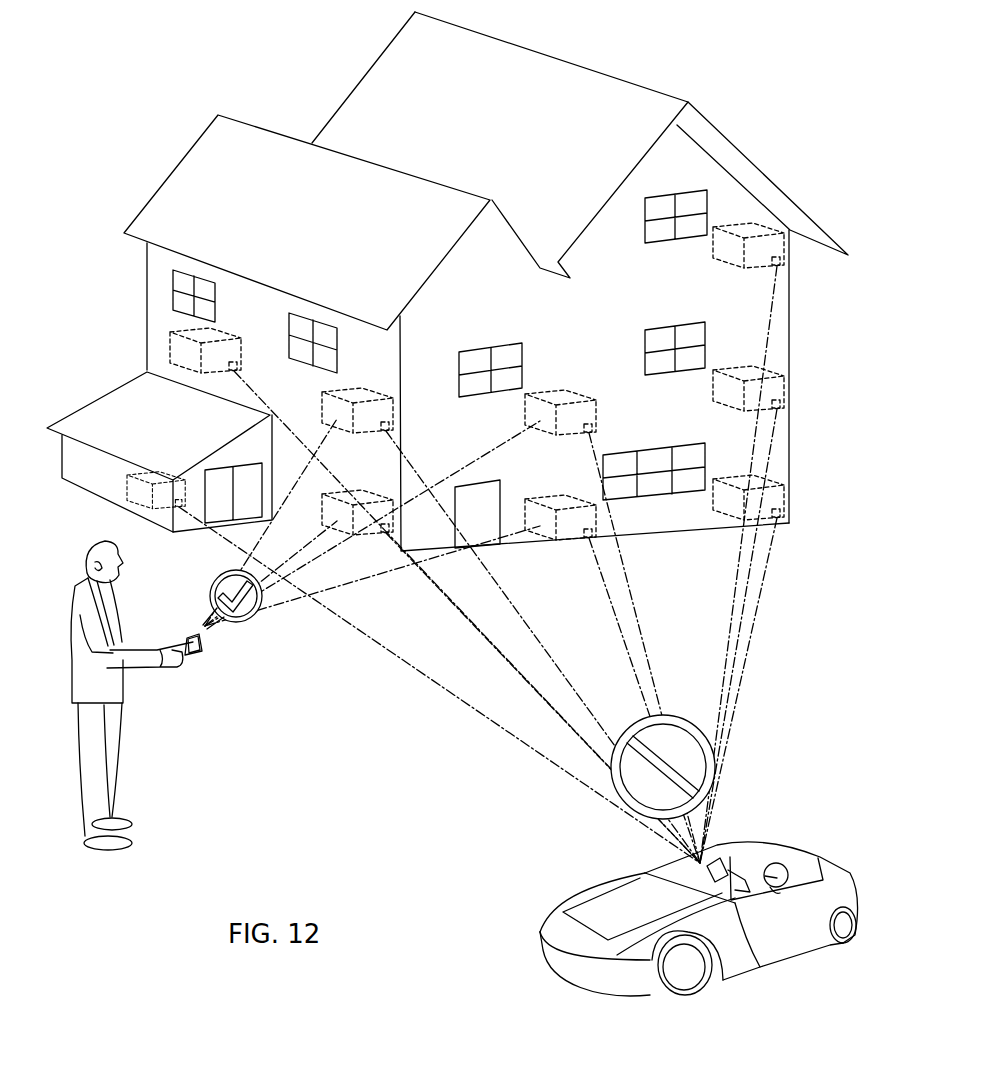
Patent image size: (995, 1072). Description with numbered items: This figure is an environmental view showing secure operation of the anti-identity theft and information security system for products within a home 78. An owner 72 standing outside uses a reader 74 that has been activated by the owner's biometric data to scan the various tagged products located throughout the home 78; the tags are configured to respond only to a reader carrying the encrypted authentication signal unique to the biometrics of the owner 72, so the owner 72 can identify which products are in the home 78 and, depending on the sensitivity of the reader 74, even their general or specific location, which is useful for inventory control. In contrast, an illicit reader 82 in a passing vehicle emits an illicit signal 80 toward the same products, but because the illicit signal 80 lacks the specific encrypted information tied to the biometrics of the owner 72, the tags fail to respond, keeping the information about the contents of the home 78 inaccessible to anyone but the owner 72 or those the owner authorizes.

The owner 72 is at (75, 592).
The reader 74 is at (200, 643).
The home 78 is at (572, 93).
The illicit signal 80 is at (737, 653).
The illicit reader 82 is at (720, 863).